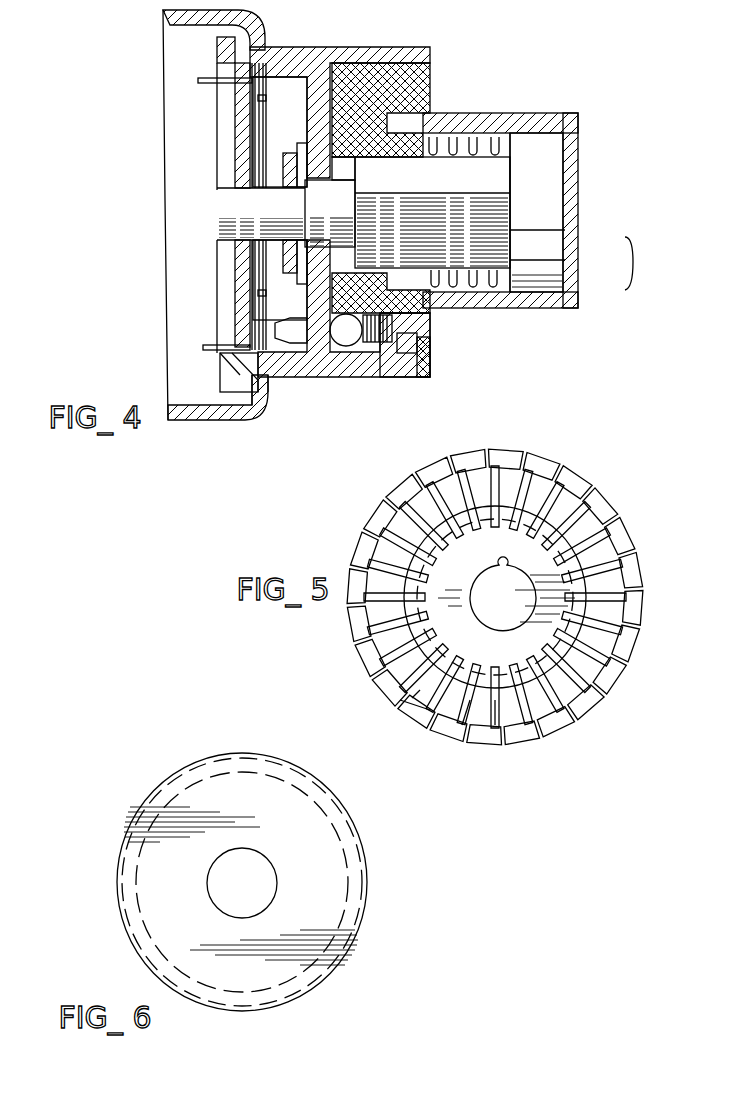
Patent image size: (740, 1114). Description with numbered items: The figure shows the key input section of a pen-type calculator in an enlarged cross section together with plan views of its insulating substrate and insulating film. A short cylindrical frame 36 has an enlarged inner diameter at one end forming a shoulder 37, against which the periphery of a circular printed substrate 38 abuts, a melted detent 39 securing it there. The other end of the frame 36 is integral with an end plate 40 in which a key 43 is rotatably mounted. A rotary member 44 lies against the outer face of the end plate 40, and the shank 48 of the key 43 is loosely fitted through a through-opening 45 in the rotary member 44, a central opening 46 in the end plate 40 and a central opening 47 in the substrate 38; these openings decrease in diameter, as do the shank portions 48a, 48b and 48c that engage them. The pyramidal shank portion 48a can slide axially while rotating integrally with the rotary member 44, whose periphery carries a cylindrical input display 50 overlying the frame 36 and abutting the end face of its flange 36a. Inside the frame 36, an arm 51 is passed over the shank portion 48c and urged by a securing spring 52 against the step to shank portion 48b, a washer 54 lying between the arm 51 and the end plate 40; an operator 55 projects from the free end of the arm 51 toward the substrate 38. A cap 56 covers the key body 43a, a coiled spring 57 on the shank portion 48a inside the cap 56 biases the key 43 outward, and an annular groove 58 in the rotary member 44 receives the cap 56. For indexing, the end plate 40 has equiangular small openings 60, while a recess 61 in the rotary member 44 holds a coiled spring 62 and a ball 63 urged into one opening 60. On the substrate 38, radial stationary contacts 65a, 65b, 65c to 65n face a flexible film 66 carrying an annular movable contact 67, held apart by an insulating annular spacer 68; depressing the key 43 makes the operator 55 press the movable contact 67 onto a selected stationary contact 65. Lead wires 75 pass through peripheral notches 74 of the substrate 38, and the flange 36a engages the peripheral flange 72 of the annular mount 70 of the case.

In FIG. 4, the cylindrical frame 36 is at (247, 380).
In FIG. 4, the flange 36a is at (240, 383).
In FIG. 4, the shoulder 37 is at (253, 405).
In FIG. 4, the printed substrate 38 is at (243, 125).
In FIG. 5, the printed substrate 38 is at (597, 709).
In FIG. 4, the detent 39 is at (240, 355).
In FIG. 4, the end plate 40 is at (318, 75).
In FIG. 4, the key 43 is at (545, 210).
In FIG. 4, the key body 43a is at (557, 272).
In FIG. 4, the rotary member 44 is at (410, 345).
In FIG. 4, the through-opening 45 is at (380, 160).
In FIG. 4, the central opening 46 is at (314, 178).
In FIG. 4, the central opening 47 is at (240, 185).
In FIG. 5, the central opening 47 is at (503, 566).
In FIG. 4, the shank 48 is at (500, 252).
In FIG. 4, the shank portion 48a is at (452, 252).
In FIG. 4, the shank portion 48b is at (342, 187).
In FIG. 4, the shank portion 48c is at (235, 210).
In FIG. 4, the input display 50 is at (372, 60).
In FIG. 4, the arm 51 is at (300, 296).
In FIG. 4, the securing spring 52 is at (283, 190).
In FIG. 4, the washer 54 is at (298, 145).
In FIG. 4, the operator 55 is at (285, 340).
In FIG. 4, the cap 56 is at (558, 233).
In FIG. 4, the coiled spring 57 is at (478, 140).
In FIG. 4, the annular groove 58 is at (420, 117).
In FIG. 4, the small openings 60 is at (328, 345).
In FIG. 4, the recess 61 is at (360, 348).
In FIG. 4, the coiled spring 62 is at (425, 370).
In FIG. 4, the ball 63 is at (400, 362).
In FIG. 4, the stationary contacts 65 is at (262, 326).
In FIG. 5, the stationary contact 65a is at (437, 722).
In FIG. 5, the stationary contact 65b is at (461, 735).
In FIG. 5, the stationary contact 65c is at (500, 735).
In FIG. 5, the stationary contact 65n is at (403, 690).
In FIG. 4, the flexible film 66 is at (253, 262).
In FIG. 6, the flexible film 66 is at (367, 870).
In FIG. 4, the movable contact 67 is at (259, 312).
In FIG. 6, the movable contact 67 is at (357, 903).
In FIG. 4, the annular spacer 68 is at (256, 300).
In FIG. 5, the annular spacer 68 is at (364, 653).
In FIG. 4, the annular mount 70 is at (265, 394).
In FIG. 4, the peripheral flange 72 is at (270, 385).
In FIG. 5, the notches 74 is at (428, 713).
In FIG. 4, the lead wires 75 is at (205, 80).